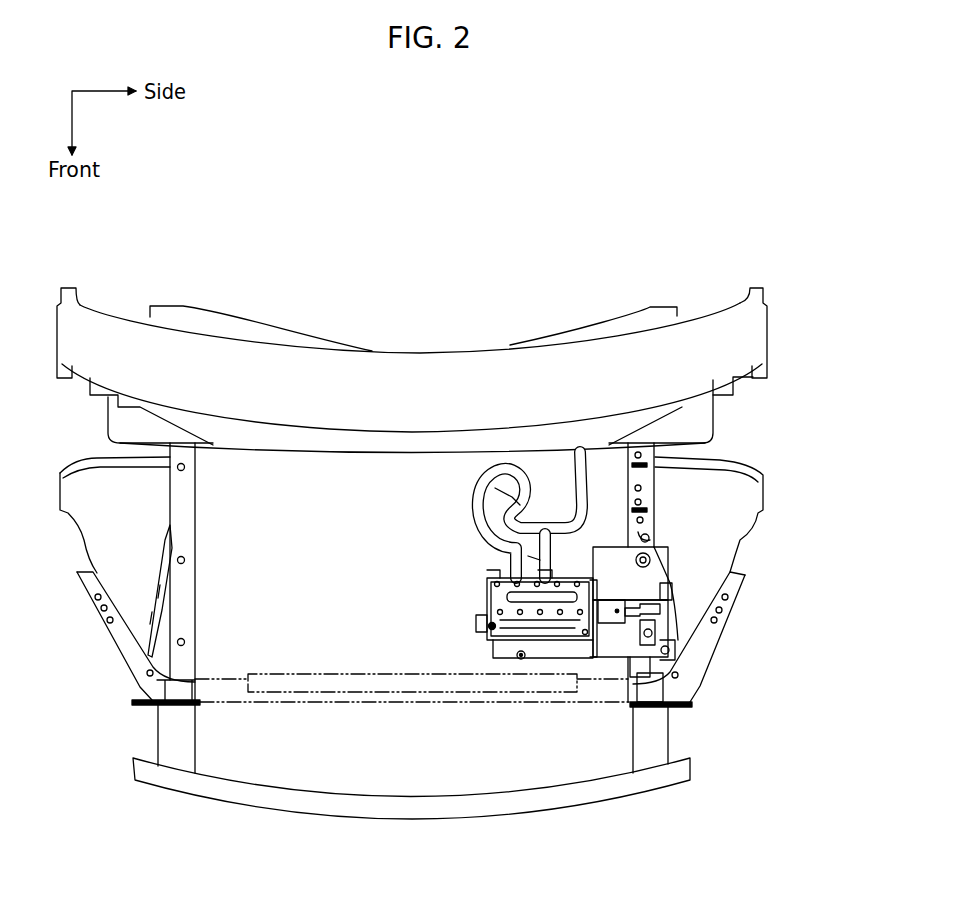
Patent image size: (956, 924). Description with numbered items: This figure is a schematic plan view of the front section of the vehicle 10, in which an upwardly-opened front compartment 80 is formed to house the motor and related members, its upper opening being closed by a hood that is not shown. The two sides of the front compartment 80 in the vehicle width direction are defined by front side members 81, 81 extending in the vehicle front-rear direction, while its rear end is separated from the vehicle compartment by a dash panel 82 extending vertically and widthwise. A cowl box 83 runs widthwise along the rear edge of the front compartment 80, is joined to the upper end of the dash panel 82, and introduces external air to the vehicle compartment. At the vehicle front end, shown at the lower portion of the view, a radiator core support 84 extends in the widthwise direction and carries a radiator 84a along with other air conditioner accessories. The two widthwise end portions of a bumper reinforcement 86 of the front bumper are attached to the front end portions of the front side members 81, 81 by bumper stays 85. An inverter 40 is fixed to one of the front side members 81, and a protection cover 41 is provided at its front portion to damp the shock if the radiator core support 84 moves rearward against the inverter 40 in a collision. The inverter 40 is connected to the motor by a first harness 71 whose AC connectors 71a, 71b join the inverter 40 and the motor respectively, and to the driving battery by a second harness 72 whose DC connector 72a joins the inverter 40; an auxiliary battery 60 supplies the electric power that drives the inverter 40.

The vehicle 10 is at (640, 230).
The inverter 40 is at (487, 617).
The protection cover 41 is at (501, 653).
The auxiliary battery 60 is at (609, 546).
The first harness 71 is at (485, 524).
The AC connector 71a is at (577, 444).
The AC connector 71b is at (490, 494).
The second harness 72 is at (563, 490).
The DC connector 72a is at (488, 572).
The front compartment 80 is at (307, 556).
The front side member 81 is at (646, 498).
The dash panel 82 is at (700, 424).
The cowl box 83 is at (404, 359).
The radiator core support 84 is at (396, 703).
The radiator 84a is at (324, 672).
The bumper stay 85 is at (168, 734).
The bumper reinforcement 86 is at (489, 807).